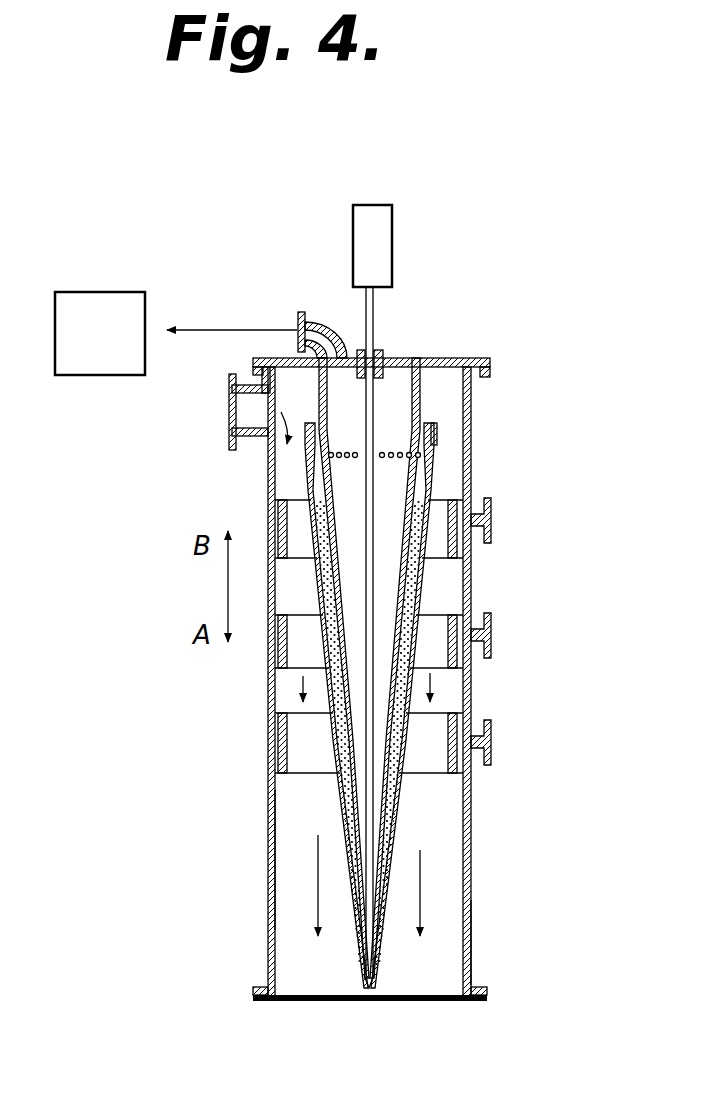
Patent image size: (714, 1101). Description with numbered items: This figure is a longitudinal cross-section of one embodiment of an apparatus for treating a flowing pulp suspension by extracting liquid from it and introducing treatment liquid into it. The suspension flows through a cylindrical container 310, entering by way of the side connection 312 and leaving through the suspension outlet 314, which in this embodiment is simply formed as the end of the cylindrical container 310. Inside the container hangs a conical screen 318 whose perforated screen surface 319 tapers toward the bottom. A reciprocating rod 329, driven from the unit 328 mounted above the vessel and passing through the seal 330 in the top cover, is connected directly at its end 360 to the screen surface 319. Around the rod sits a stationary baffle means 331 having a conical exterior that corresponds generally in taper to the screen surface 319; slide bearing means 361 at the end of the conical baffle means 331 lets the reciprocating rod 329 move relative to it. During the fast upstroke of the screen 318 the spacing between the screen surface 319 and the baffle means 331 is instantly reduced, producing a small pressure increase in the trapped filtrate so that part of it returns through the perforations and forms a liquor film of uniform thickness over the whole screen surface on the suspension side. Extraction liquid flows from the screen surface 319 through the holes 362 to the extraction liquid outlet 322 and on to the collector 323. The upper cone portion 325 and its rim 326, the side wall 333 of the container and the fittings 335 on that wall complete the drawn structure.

The cylindrical container 310 is at (271, 714).
The inlet conduit 312 is at (233, 450).
The suspension outlet 314 is at (300, 1003).
The screen 318 is at (293, 855).
The screen surface 319 is at (349, 817).
The extraction liquid outlet 322 is at (318, 318).
The collector 323 is at (118, 298).
The inner conical member 325 is at (425, 388).
The upper end of outer cone 326 is at (440, 437).
The drive motor 328 is at (381, 223).
The reciprocating rod 329 is at (376, 708).
The shaft seal 330 is at (383, 350).
The stationary baffle means 331 is at (334, 637).
The housing side wall 333 is at (465, 942).
The fittings 335 is at (500, 525).
The end of reciprocating rod 360 is at (371, 988).
The slide bearing means 361 is at (384, 775).
The holes 362 is at (360, 453).